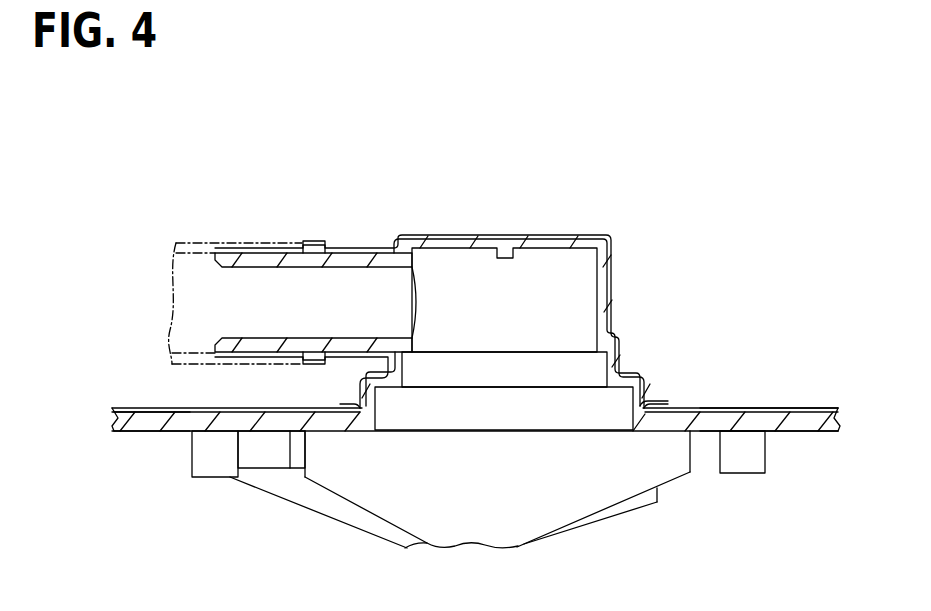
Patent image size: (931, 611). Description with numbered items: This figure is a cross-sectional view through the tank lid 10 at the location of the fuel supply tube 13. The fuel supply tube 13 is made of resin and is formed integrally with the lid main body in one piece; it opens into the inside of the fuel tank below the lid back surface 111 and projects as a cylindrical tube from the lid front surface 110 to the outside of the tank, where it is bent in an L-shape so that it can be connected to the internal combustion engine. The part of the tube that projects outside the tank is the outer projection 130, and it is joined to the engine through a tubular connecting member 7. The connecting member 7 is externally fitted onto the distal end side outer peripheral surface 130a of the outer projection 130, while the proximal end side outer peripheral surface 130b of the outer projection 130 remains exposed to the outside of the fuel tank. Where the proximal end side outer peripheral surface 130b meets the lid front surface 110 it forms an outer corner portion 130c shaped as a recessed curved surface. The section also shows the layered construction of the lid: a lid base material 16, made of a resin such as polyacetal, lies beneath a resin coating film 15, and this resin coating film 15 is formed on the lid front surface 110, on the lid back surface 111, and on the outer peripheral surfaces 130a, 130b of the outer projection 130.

The connecting member 7 is at (188, 243).
The tank lid 10 is at (128, 408).
The fuel supply tube 13 is at (577, 247).
The resin coating film 15 is at (150, 412).
The lid base material 16 is at (120, 420).
The lid front surface 110 is at (822, 408).
The lid back surface 111 is at (828, 432).
The outer projection 130 is at (398, 159).
The distal end side outer peripheral surface 130a is at (278, 253).
The proximal end side outer peripheral surface 130b is at (427, 238).
The outer corner portion 130c is at (648, 403).